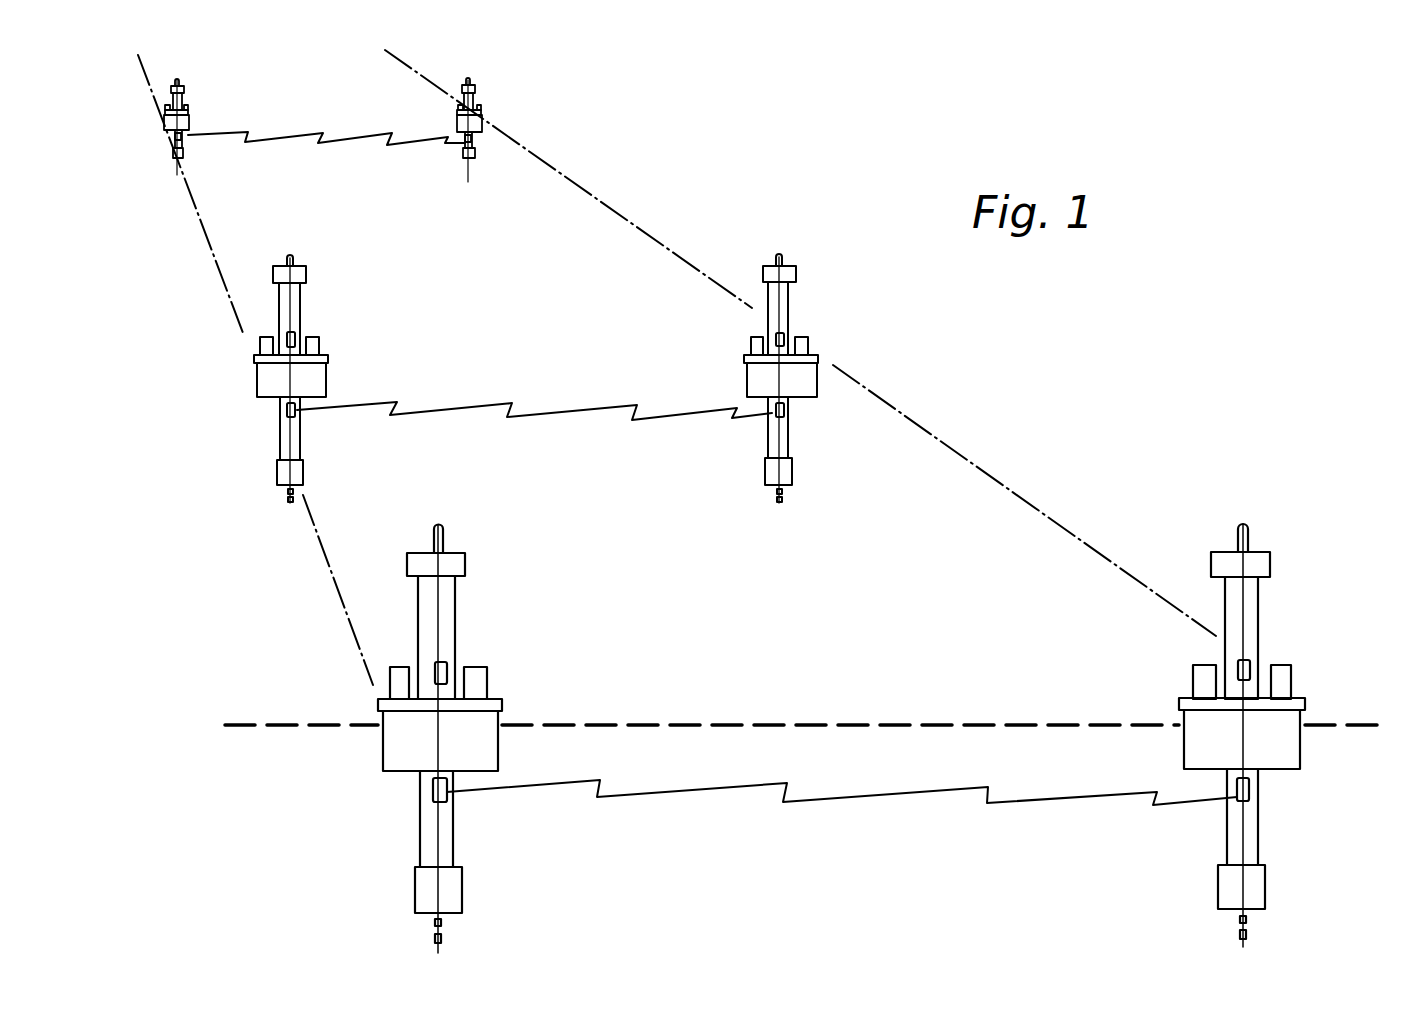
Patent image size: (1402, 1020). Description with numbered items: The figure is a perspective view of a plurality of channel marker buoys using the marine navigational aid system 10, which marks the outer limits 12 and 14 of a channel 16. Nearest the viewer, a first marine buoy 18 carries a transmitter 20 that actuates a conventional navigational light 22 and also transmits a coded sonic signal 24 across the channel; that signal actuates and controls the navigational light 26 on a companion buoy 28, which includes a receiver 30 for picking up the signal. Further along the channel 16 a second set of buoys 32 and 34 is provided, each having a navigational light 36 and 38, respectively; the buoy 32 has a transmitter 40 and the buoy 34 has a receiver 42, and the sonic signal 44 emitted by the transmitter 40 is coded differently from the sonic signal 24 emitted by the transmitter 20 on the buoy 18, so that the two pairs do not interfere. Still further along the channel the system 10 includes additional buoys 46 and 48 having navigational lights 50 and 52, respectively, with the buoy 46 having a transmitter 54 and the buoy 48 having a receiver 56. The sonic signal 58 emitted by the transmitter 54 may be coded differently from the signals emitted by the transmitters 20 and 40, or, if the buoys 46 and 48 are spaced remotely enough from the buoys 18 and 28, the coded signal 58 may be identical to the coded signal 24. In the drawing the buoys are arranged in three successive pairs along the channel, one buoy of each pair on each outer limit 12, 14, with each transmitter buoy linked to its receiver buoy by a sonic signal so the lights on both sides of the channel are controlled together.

The marine navigational aid system 10 is at (245, 397).
The outer limit of channel 12 is at (613, 207).
The outer limit of channel 14 is at (197, 213).
The channel 16 is at (420, 226).
The first marine buoy 18 is at (465, 739).
The transmitter 20 is at (448, 672).
The navigational light 22 is at (444, 530).
The coded sonic signal 24 is at (855, 795).
The navigational light 26 is at (1249, 534).
The buoy 28 is at (1256, 727).
The receiver 30 is at (1251, 668).
The buoy 32 is at (329, 379).
The buoy 34 is at (827, 378).
The navigational light 36 is at (292, 257).
The navigational light 38 is at (784, 257).
The transmitter 40 is at (296, 338).
The receiver 42 is at (785, 337).
The sonic signal 44 is at (533, 416).
The buoy 46 is at (199, 108).
The buoy 48 is at (501, 120).
The navigational light 50 is at (179, 82).
The navigational light 52 is at (471, 80).
The transmitter 54 is at (183, 100).
The receiver 56 is at (474, 100).
The sonic signal 58 is at (296, 133).